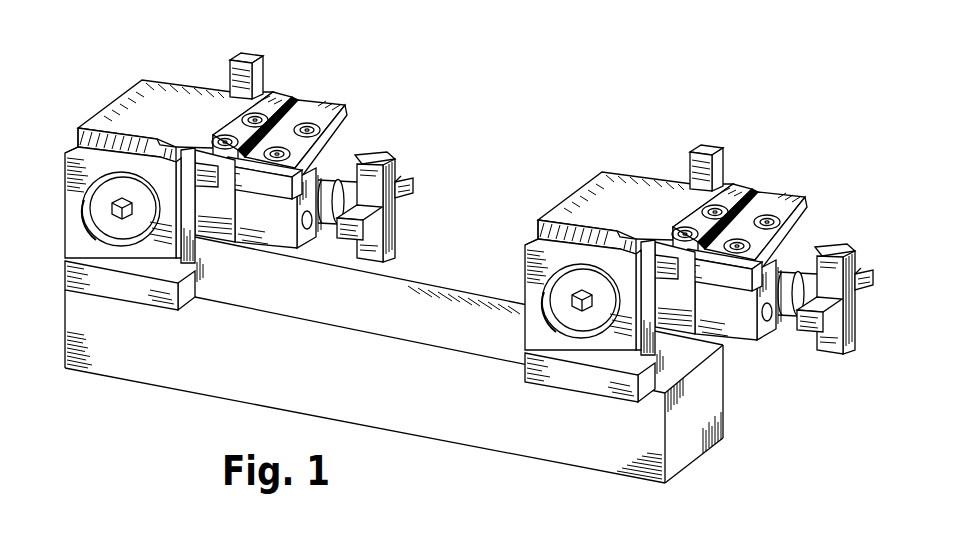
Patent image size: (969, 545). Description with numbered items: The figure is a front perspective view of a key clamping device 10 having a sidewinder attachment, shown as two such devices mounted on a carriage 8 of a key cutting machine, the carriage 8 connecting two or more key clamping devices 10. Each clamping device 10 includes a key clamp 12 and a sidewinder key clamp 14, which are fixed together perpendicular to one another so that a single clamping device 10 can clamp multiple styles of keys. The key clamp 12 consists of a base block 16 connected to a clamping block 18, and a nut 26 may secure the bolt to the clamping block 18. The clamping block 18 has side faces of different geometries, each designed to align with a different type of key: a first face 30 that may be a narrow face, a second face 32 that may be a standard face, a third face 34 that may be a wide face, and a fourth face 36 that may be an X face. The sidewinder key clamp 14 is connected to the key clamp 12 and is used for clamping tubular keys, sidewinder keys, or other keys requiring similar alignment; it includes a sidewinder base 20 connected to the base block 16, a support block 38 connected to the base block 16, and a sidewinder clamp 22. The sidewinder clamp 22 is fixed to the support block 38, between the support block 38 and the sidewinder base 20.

The carriage 8 is at (97, 342).
The key clamping device 10 is at (690, 281).
The key clamp 12 is at (456, 238).
The sidewinder key clamp 14 is at (336, 86).
The base block 16 is at (150, 100).
The clamping block 18 is at (90, 168).
The sidewinder base 20 is at (285, 93).
The sidewinder clamp 22 is at (328, 110).
The nut 26 is at (107, 195).
The first face 30 is at (90, 263).
The second face 32 is at (195, 237).
The third face 34 is at (148, 138).
The fourth face 36 is at (65, 207).
The support block 38 is at (821, 268).